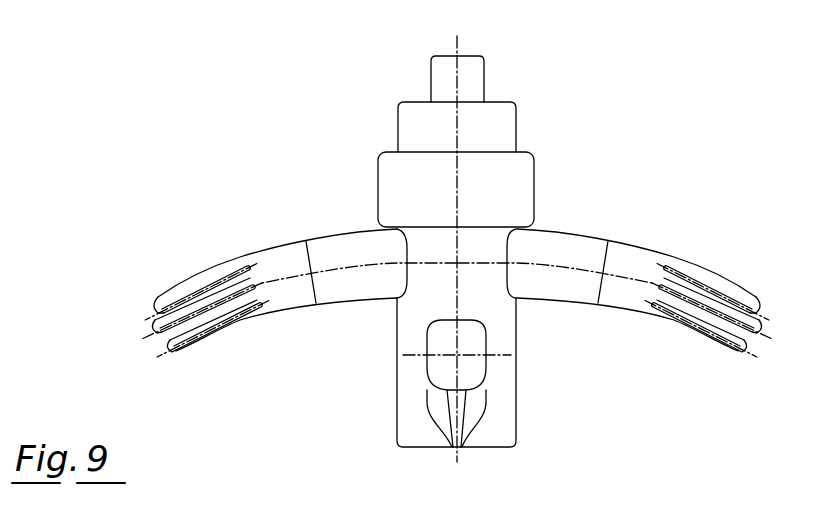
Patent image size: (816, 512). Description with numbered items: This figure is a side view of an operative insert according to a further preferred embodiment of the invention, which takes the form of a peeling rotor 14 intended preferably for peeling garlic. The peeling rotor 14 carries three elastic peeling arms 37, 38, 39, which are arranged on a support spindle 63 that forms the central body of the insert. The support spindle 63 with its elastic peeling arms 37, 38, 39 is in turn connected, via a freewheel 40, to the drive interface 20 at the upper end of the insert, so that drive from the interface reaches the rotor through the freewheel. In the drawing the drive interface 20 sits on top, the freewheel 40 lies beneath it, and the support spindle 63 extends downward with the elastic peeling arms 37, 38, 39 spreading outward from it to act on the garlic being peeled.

The peeling rotor 14 is at (196, 107).
The drive interface 20 is at (368, 98).
The freewheel 40 is at (360, 195).
The support spindle 63 is at (502, 407).
The peeling arm 38 is at (437, 356).
The peeling arm 39 is at (308, 297).
The peeling arm 37 is at (618, 301).